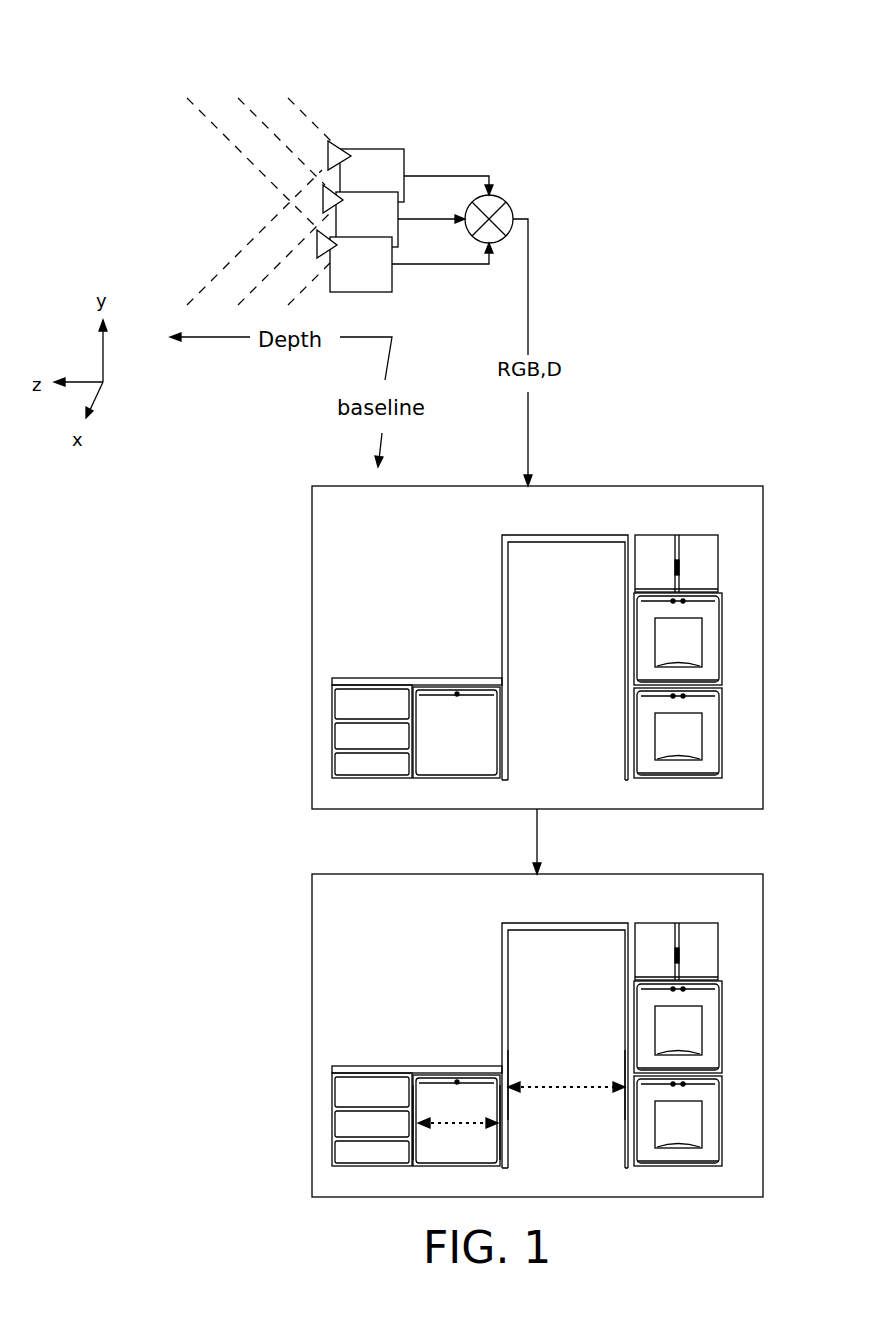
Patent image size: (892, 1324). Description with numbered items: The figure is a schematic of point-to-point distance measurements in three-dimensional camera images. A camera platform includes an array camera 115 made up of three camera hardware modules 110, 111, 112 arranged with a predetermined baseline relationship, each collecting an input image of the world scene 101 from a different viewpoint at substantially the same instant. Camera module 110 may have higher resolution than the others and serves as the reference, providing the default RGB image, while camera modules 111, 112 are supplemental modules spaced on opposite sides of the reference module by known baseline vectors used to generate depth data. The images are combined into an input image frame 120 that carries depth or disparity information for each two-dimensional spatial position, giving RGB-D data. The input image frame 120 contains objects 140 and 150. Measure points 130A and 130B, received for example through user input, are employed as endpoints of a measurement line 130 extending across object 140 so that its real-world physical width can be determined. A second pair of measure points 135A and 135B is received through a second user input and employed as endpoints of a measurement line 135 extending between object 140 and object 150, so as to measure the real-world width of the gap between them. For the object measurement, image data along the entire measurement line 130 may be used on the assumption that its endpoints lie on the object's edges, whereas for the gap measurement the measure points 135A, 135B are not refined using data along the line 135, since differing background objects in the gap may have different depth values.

The world scene 101 is at (112, 231).
The array camera 115 is at (308, 75).
The camera hardware module 110 is at (352, 233).
The camera hardware module 111 is at (359, 184).
The camera hardware module 112 is at (347, 278).
The input image frame 120 is at (713, 485).
The object 140 is at (440, 750).
The object 150 is at (661, 746).
The measurement line 130 is at (463, 1125).
The measure point 130A is at (418, 1117).
The measure point 130B is at (497, 1118).
The measurement line 135 is at (563, 1084).
The measure point 135A is at (508, 1088).
The measure point 135B is at (625, 1086).